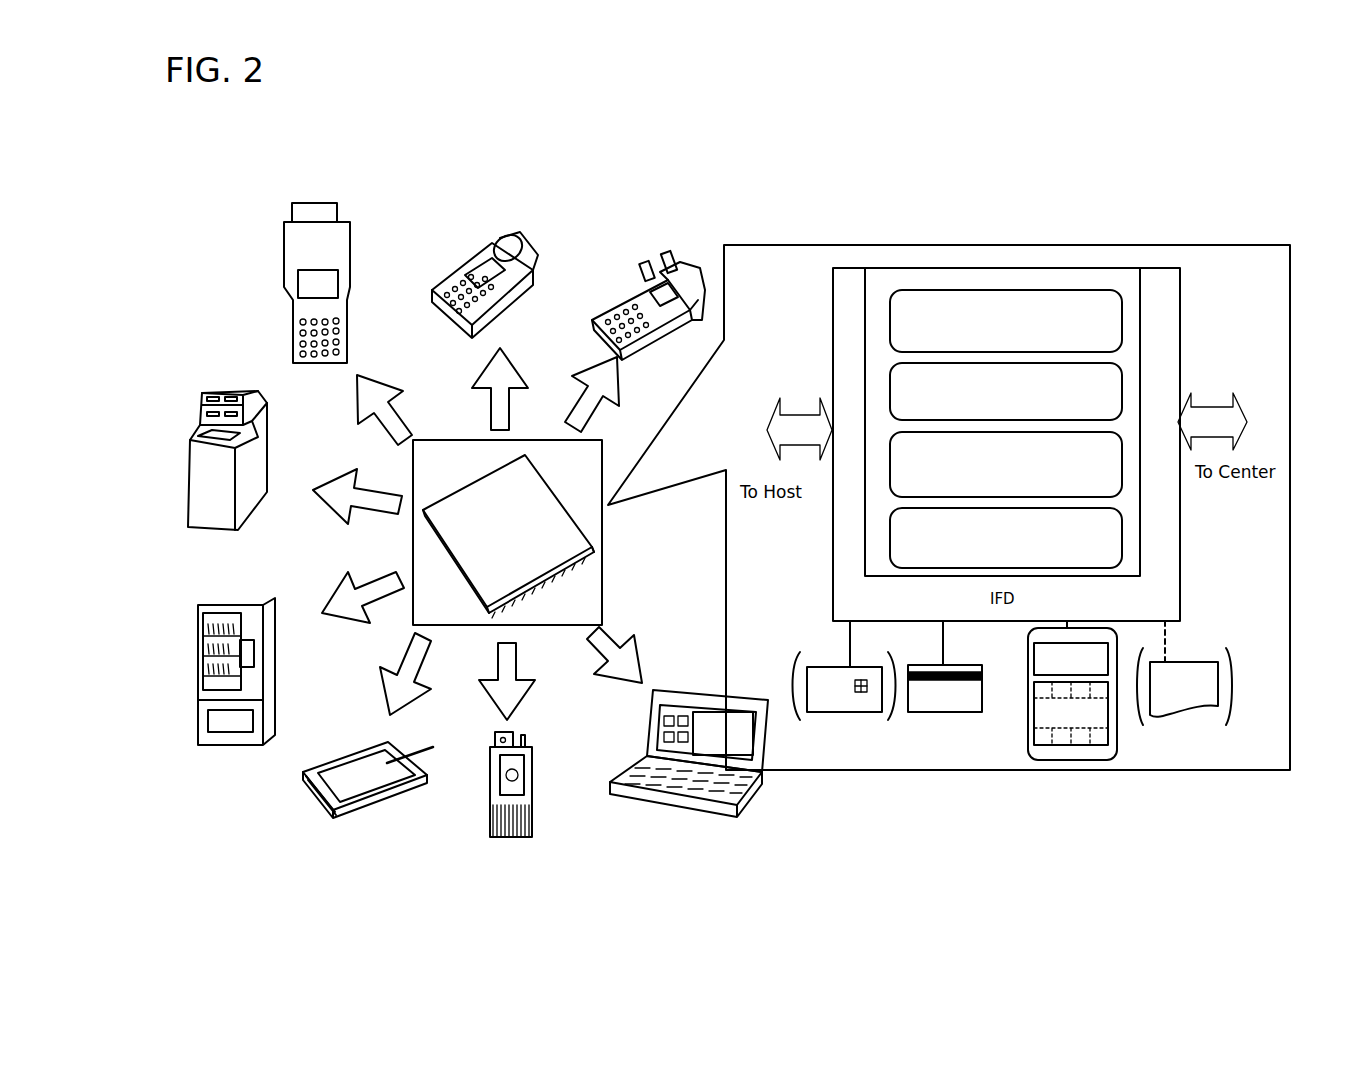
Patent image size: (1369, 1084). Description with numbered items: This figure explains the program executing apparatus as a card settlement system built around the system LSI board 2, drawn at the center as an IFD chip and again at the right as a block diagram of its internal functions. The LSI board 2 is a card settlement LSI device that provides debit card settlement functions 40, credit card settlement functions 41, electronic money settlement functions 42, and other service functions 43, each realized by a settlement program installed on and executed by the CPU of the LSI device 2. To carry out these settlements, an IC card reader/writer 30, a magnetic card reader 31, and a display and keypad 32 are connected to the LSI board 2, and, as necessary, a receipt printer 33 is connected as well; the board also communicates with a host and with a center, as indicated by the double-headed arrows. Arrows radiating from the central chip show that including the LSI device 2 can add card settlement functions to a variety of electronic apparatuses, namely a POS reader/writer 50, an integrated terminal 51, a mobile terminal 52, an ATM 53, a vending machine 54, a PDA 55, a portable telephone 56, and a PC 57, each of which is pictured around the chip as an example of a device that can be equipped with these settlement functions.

The system LSI board 2 is at (560, 497).
The IC card reader/writer 30 is at (845, 712).
The magnetic card reader 31 is at (968, 712).
The display and keypad 32 is at (1075, 760).
The receipt printer 33 is at (1193, 715).
The debit card settlement functions 40 is at (958, 290).
The credit card settlement functions 41 is at (1113, 377).
The electronic money settlement functions 42 is at (1110, 455).
The other service functions 43 is at (1112, 545).
The POS reader/writer 50 is at (673, 265).
The integrated terminal 51 is at (512, 233).
The mobile terminal 52 is at (312, 203).
The ATM 53 is at (218, 390).
The vending machine 54 is at (203, 745).
The PDA 55 is at (390, 795).
The portable telephone 56 is at (523, 837).
The PC 57 is at (698, 807).